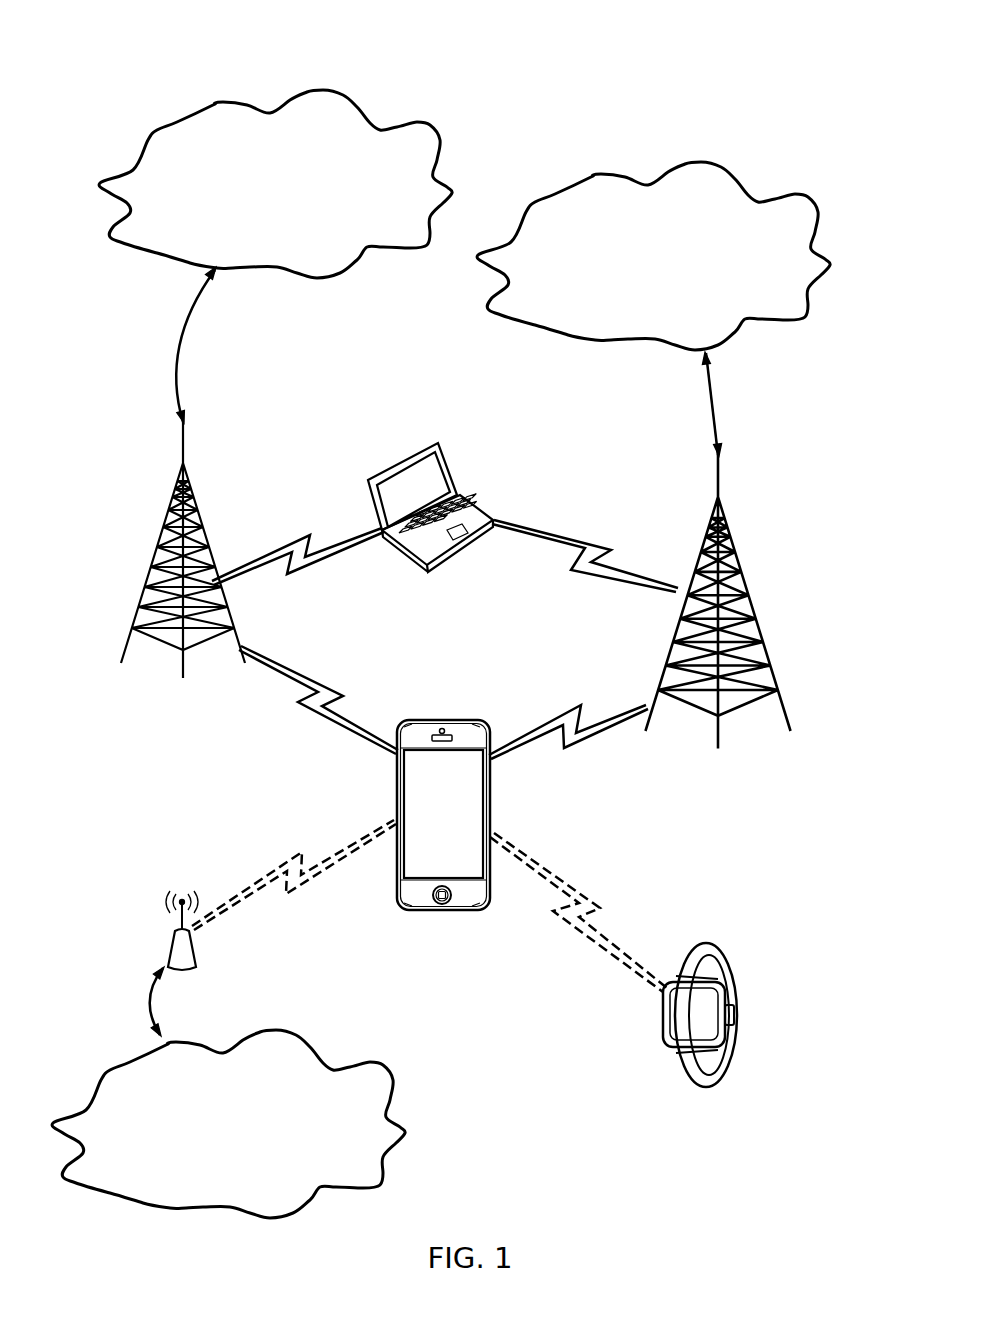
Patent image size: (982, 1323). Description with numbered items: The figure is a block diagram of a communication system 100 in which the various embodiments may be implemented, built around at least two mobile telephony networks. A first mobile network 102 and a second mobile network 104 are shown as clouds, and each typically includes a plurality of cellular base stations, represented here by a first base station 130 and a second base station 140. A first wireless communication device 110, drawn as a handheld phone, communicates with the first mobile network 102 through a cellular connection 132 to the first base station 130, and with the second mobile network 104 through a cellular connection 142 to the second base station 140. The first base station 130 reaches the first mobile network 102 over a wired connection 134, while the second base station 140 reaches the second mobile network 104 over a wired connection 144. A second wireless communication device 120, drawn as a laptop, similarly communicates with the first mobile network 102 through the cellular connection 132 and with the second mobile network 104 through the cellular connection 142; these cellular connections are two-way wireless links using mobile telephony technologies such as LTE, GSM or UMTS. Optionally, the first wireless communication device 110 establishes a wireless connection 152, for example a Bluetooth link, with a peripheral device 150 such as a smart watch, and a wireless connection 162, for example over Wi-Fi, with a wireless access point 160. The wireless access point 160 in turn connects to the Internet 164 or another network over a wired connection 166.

The communication system 100 is at (198, 64).
The first mobile network 102 is at (330, 277).
The second mobile network 104 is at (593, 175).
The first wireless communication device 110 is at (489, 798).
The second wireless communication device 120 is at (373, 475).
The first base station 130 is at (158, 555).
The cellular connection 132 is at (307, 537).
The wired connection 134 is at (180, 335).
The second base station 140 is at (712, 523).
The cellular connection 142 is at (540, 537).
The wired connection 144 is at (697, 397).
The peripheral device 150 is at (712, 944).
The wireless connection 152 is at (563, 882).
The wireless access point 160 is at (170, 940).
The wireless connection 162 is at (285, 863).
The Internet 164 is at (390, 1063).
The wired connection 166 is at (158, 1017).